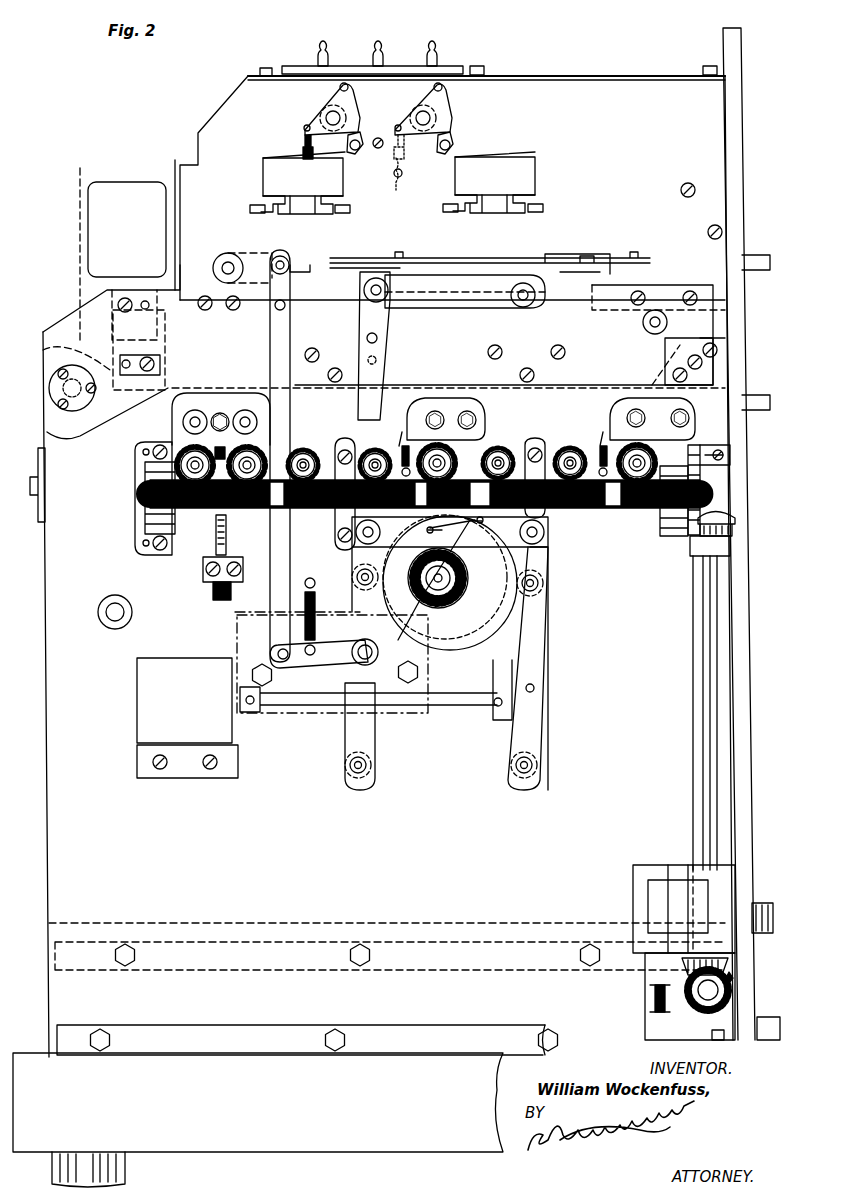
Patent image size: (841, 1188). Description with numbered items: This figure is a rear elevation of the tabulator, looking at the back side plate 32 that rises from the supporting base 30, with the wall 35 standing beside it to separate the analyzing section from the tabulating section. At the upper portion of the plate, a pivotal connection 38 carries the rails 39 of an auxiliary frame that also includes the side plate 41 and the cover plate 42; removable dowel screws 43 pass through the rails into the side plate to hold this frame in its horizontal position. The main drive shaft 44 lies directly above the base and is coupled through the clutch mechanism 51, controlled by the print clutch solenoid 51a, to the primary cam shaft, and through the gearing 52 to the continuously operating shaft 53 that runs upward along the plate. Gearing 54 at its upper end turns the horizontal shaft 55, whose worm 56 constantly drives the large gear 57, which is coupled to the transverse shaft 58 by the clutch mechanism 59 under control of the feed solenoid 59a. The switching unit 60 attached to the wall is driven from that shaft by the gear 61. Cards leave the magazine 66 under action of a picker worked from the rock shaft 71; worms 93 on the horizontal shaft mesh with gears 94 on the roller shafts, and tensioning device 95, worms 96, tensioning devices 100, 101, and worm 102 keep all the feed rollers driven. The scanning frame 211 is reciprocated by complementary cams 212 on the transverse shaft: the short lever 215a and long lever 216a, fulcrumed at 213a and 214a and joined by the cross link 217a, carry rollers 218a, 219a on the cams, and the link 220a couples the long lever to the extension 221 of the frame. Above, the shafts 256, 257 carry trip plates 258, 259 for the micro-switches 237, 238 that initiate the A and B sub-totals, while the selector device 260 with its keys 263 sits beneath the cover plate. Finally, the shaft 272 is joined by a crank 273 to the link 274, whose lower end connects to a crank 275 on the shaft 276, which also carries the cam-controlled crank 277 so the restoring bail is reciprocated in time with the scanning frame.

The supporting base 30 is at (36, 1058).
The back side plate 32 is at (70, 836).
The wall 35 is at (745, 708).
The pivotal connection 38 is at (63, 388).
The rails 39 is at (551, 378).
The side plate 41 is at (570, 92).
The cover plate 42 is at (665, 76).
The dowel screws 43 is at (692, 375).
The main drive shaft 44 is at (710, 998).
The clutch mechanism 51 is at (650, 982).
The print clutch solenoid 51a is at (640, 892).
The gearing 52 is at (735, 995).
The continuously operating shaft 53 is at (696, 720).
The gearing 54 is at (704, 512).
The horizontal shaft 55 is at (603, 508).
The worm 56 is at (455, 480).
The large gear 57 is at (402, 632).
The transverse shaft 58 is at (445, 585).
The clutch mechanism 59 is at (520, 560).
The feed solenoid 59a is at (184, 670).
The switching unit 60 is at (230, 612).
The gear 61 is at (460, 600).
The magazine 66 is at (86, 236).
The rock shaft 71 is at (113, 604).
The worms 93 is at (188, 510).
The gears 94 is at (182, 448).
The tensioning device 95 is at (216, 545).
The worms 96 is at (388, 452).
The tensioning device 100 is at (460, 400).
The tensioning device 101 is at (620, 400).
The worm 102 is at (648, 520).
The scanning frame 211 is at (555, 273).
The complementary cams 212 is at (440, 645).
The fulcrum 213a is at (510, 766).
The fulcrum 214a is at (347, 766).
The short lever 215a is at (520, 730).
The long lever 216a is at (355, 728).
The cross link 217a is at (360, 548).
The roller 218a is at (545, 595).
The roller 219a is at (362, 590).
The link 220a is at (428, 300).
The extension 221 is at (528, 308).
The micro-switch 237 is at (272, 170).
The micro-switch 238 is at (528, 173).
The shaft 256 is at (438, 118).
The shaft 257 is at (326, 114).
The trip plate 258 is at (350, 108).
The trip plate 259 is at (446, 106).
The selector device 260 is at (460, 61).
The keys 263 is at (378, 46).
The shaft 272 is at (230, 260).
The crank 273 is at (250, 260).
The link 274 is at (270, 347).
The crank 275 is at (322, 665).
The shaft 276 is at (370, 658).
The crank 277 is at (345, 622).